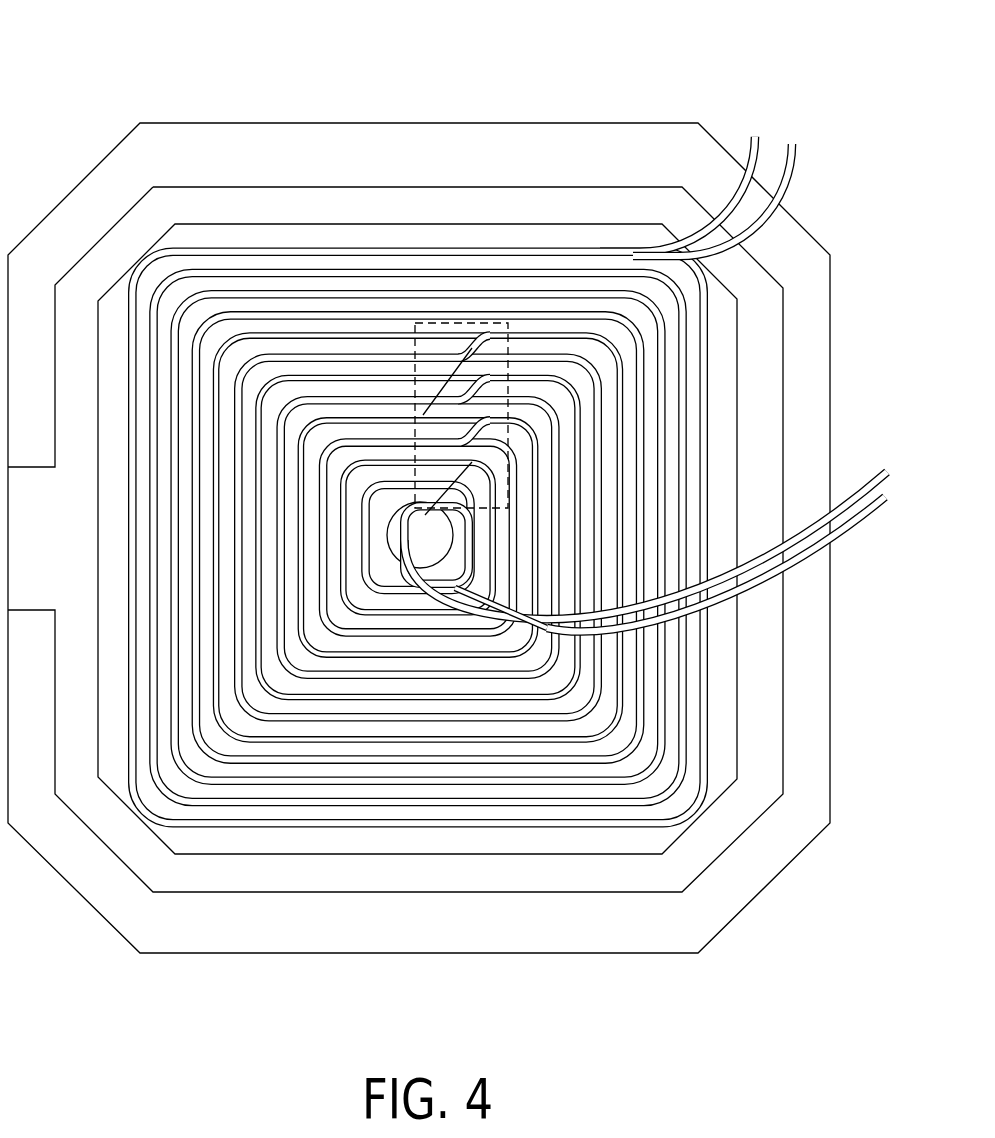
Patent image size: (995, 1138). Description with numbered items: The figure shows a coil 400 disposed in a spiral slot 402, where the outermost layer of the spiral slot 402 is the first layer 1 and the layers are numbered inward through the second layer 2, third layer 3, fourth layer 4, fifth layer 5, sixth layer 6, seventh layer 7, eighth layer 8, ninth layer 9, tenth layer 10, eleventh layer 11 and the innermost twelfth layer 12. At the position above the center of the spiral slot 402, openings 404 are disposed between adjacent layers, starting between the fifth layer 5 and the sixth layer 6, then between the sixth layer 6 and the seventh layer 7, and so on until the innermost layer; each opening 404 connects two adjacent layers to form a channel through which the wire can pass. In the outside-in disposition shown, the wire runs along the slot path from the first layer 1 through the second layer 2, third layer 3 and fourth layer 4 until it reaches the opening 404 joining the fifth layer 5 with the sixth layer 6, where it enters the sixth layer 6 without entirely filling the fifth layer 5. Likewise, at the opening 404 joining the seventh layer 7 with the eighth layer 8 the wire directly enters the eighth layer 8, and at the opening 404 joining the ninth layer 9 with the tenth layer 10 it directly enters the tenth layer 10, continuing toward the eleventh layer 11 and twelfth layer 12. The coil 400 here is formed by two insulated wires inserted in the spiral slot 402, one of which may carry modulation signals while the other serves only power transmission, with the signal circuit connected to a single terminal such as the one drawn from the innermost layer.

The first layer 1 is at (417, 529).
The second layer 2 is at (418, 530).
The third layer 3 is at (418, 530).
The fourth layer 4 is at (418, 530).
The fifth layer 5 is at (418, 531).
The sixth layer 6 is at (417, 531).
The seventh layer 7 is at (418, 531).
The eighth layer 8 is at (418, 530).
The ninth layer 9 is at (418, 531).
The tenth layer 10 is at (418, 529).
The eleventh layer 11 is at (417, 530).
The twelfth layer 12 is at (418, 530).
The coil 400 is at (509, 435).
The spiral slot 402 is at (163, 252).
The opening 404 is at (490, 323).